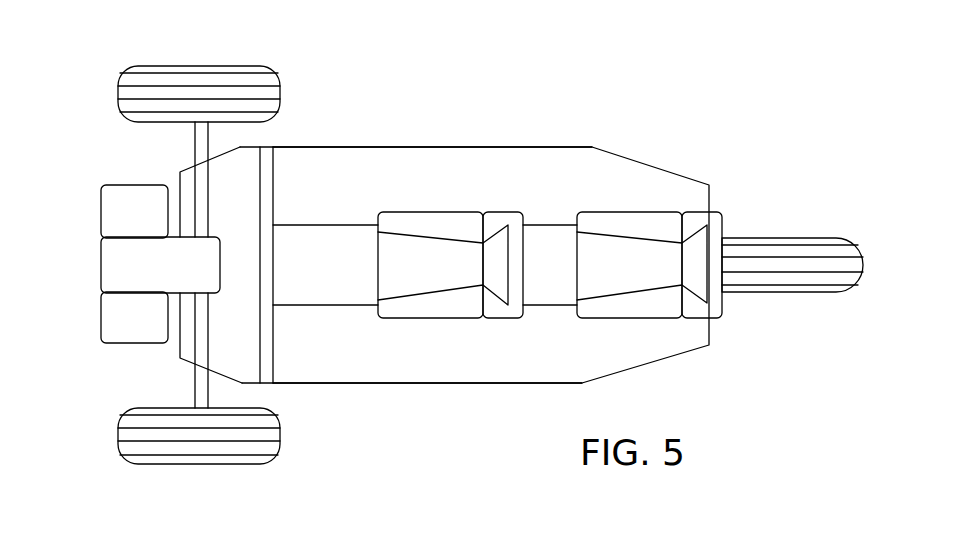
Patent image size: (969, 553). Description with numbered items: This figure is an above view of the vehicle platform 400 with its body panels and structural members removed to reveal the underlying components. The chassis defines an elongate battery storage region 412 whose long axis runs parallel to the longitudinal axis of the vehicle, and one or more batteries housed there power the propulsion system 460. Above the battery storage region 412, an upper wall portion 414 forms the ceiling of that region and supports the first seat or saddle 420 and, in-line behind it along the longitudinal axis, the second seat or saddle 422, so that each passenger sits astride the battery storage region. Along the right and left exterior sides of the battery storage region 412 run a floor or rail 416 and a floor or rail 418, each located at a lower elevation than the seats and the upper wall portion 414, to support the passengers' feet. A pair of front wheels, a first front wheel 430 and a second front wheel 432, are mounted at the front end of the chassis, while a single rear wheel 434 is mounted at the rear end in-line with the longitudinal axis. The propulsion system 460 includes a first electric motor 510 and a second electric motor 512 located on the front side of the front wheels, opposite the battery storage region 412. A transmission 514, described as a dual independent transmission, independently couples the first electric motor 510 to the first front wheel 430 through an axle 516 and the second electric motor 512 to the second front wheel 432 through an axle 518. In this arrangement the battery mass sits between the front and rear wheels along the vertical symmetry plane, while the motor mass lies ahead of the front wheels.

The vehicle platform 400 is at (455, 270).
The battery storage region 412 is at (572, 325).
The upper wall portion 414 is at (343, 242).
The floor or rail 416 is at (410, 370).
The floor or rail 418 is at (475, 155).
The first seat or saddle 420 is at (457, 305).
The second seat or saddle 422 is at (635, 307).
The first front wheel 430 is at (262, 450).
The second front wheel 432 is at (167, 80).
The rear wheel 434 is at (815, 252).
The propulsion system 460 is at (134, 271).
The first electric motor 510 is at (118, 338).
The second electric motor 512 is at (122, 193).
The transmission 514 is at (118, 272).
The axle 516 is at (200, 377).
The axle 518 is at (202, 152).